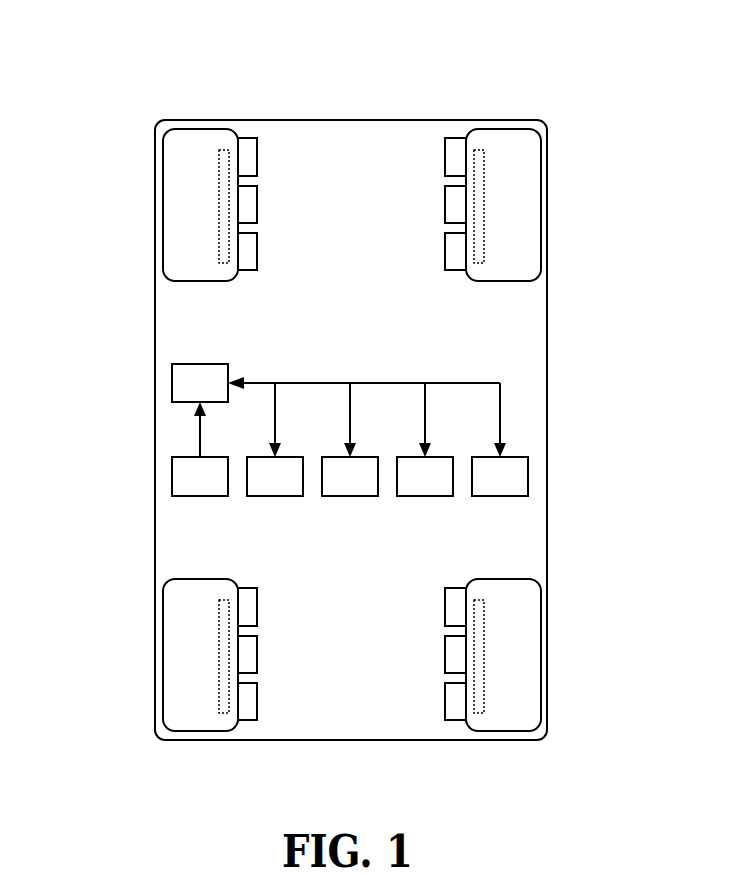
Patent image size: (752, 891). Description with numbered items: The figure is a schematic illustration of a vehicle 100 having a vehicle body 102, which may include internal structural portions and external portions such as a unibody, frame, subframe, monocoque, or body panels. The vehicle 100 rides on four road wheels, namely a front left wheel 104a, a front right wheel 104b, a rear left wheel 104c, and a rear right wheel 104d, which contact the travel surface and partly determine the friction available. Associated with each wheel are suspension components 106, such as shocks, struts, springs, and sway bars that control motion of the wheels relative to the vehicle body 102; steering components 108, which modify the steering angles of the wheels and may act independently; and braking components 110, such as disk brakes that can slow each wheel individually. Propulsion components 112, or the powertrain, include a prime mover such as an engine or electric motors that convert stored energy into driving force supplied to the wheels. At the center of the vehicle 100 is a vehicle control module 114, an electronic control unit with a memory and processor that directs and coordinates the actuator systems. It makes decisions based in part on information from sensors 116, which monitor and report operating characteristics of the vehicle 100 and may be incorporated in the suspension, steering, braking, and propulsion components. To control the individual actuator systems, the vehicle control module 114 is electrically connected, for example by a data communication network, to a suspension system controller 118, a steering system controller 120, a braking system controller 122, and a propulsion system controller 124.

The vehicle 100 is at (116, 78).
The vehicle body 102 is at (521, 122).
The front left wheel 104a is at (163, 152).
The front right wheel 104b is at (541, 154).
The rear left wheel 104c is at (163, 607).
The rear right wheel 104d is at (541, 609).
The suspension components 106 is at (258, 148).
The steering components 108 is at (258, 196).
The braking components 110 is at (219, 226).
The propulsion components 112 is at (258, 243).
The vehicle control module 114 is at (181, 396).
The sensors 116 is at (181, 489).
The suspension system controller 118 is at (256, 489).
The steering system controller 120 is at (331, 489).
The braking system controller 122 is at (406, 489).
The propulsion system controller 124 is at (481, 489).